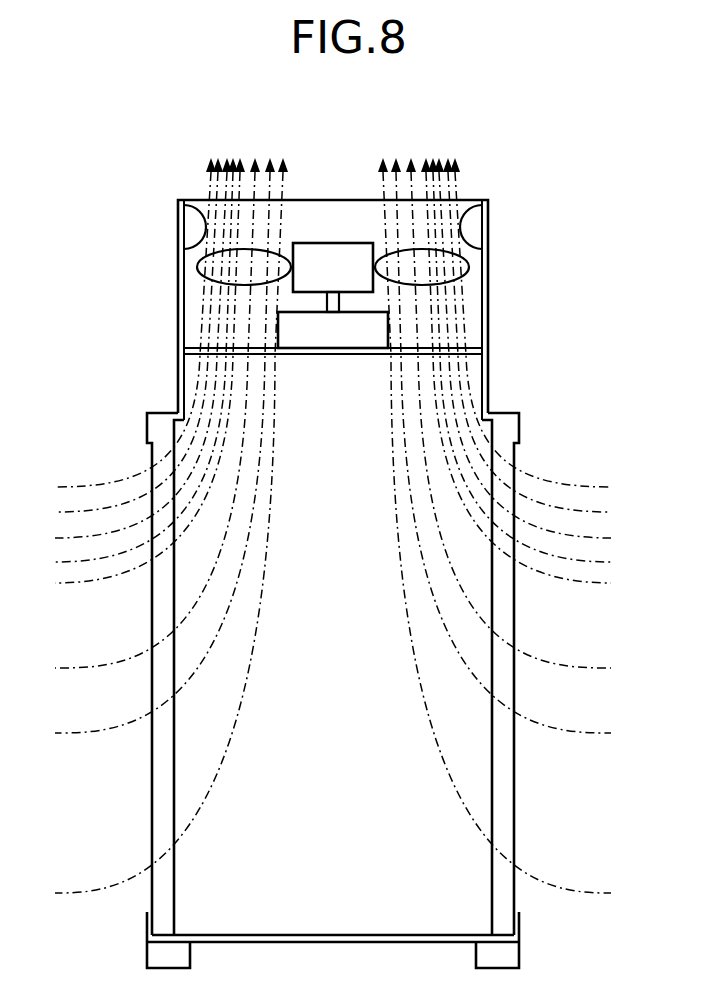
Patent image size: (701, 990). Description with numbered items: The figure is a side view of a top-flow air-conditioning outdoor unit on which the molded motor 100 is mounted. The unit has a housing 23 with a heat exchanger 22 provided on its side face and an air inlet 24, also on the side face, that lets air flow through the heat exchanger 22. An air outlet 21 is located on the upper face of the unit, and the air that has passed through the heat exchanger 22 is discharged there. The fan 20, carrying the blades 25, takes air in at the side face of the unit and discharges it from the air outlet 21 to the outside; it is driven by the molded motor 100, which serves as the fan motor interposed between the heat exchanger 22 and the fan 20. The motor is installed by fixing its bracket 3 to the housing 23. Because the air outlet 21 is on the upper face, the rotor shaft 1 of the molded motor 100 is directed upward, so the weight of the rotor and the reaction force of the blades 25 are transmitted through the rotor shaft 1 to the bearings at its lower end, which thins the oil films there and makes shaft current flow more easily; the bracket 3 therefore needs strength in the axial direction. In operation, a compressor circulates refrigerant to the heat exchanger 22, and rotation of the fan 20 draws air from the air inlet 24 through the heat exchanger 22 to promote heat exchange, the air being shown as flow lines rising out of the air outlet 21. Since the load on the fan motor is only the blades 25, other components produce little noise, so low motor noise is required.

The rotor shaft 1 is at (327, 298).
The bracket 3 is at (193, 352).
The fan 20 is at (343, 243).
The air outlet 21 is at (300, 200).
The heat exchanger 22 is at (503, 897).
The housing 23 is at (488, 226).
The air inlet 24 is at (522, 760).
The blades 25 is at (470, 267).
The molded motor 100 is at (385, 305).